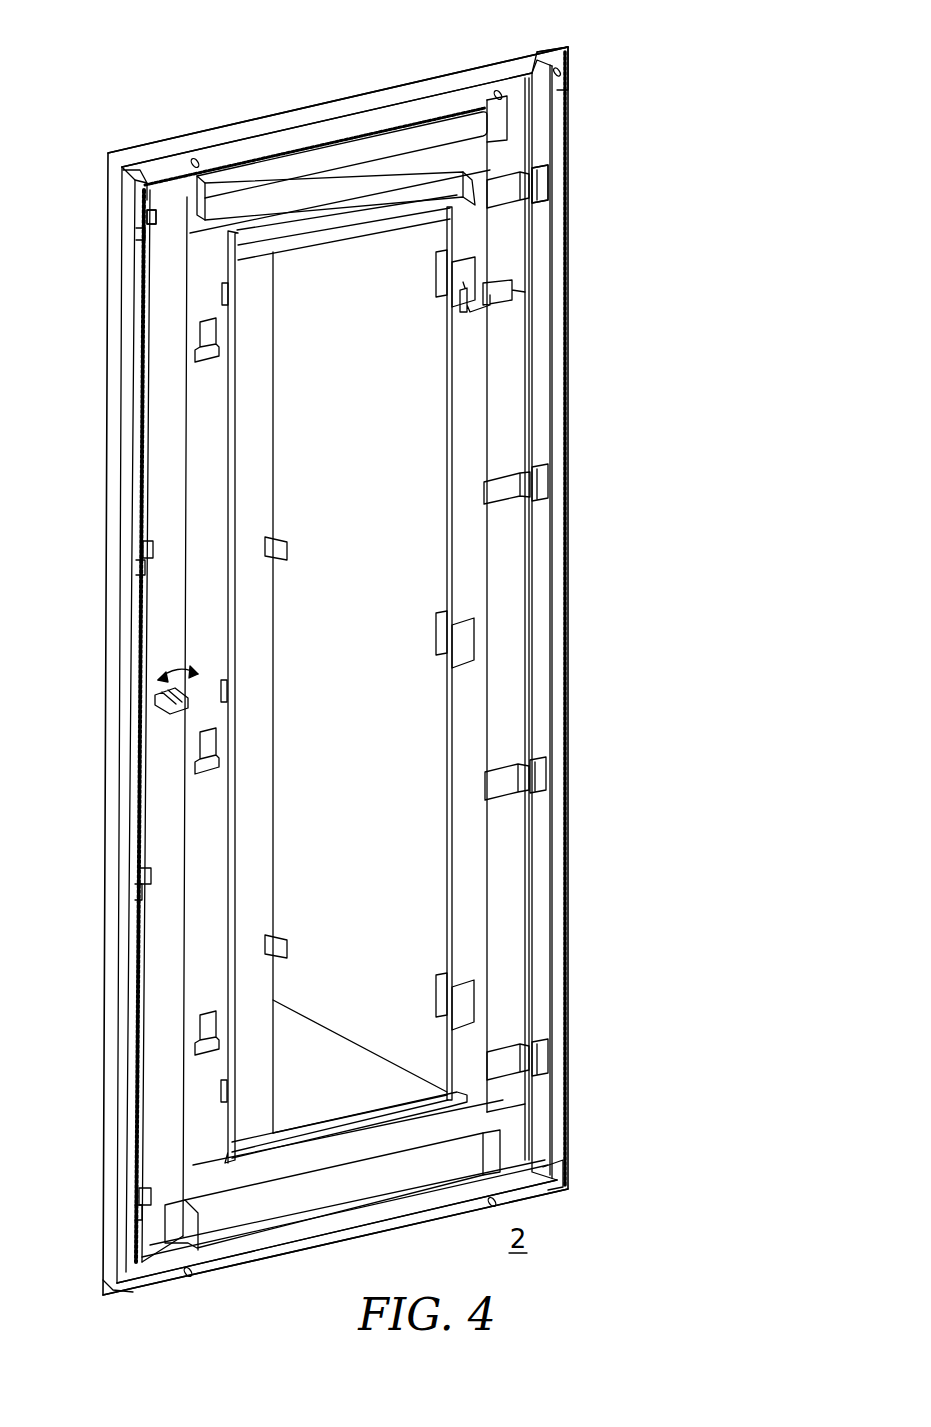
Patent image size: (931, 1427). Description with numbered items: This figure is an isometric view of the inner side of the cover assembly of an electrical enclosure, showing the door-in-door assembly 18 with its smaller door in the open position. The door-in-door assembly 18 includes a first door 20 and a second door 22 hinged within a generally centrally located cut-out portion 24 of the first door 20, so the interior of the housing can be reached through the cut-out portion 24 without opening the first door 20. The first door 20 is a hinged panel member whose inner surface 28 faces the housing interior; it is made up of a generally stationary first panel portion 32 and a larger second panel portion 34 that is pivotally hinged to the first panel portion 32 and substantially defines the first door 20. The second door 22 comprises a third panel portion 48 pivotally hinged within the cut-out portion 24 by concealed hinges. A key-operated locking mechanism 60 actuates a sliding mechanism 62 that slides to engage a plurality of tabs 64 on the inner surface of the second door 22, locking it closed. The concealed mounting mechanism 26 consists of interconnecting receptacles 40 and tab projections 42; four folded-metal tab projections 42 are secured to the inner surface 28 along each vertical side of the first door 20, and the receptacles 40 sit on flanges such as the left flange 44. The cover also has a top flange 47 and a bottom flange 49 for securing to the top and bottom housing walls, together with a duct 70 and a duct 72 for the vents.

The door-in-door assembly 18 is at (390, 72).
The first door 20 is at (232, 125).
The second door 22 is at (297, 1003).
The cut-out portion 24 is at (250, 412).
The concealed mounting mechanism 26 is at (150, 190).
The inner surface 28 is at (160, 328).
The first panel portion 32 is at (568, 60).
The second panel portion 34 is at (497, 73).
The interconnecting receptacles 40 is at (150, 230).
The tab projections 42 is at (160, 222).
The left flange 44 is at (540, 645).
The top flange 47 is at (452, 100).
The third panel portion 48 is at (352, 1033).
The bottom flange 49 is at (218, 1263).
The locking mechanism 60 is at (170, 715).
The sliding mechanism 62 is at (212, 750).
The tabs 64 is at (275, 540).
The duct 70 is at (345, 165).
The duct 72 is at (388, 1193).